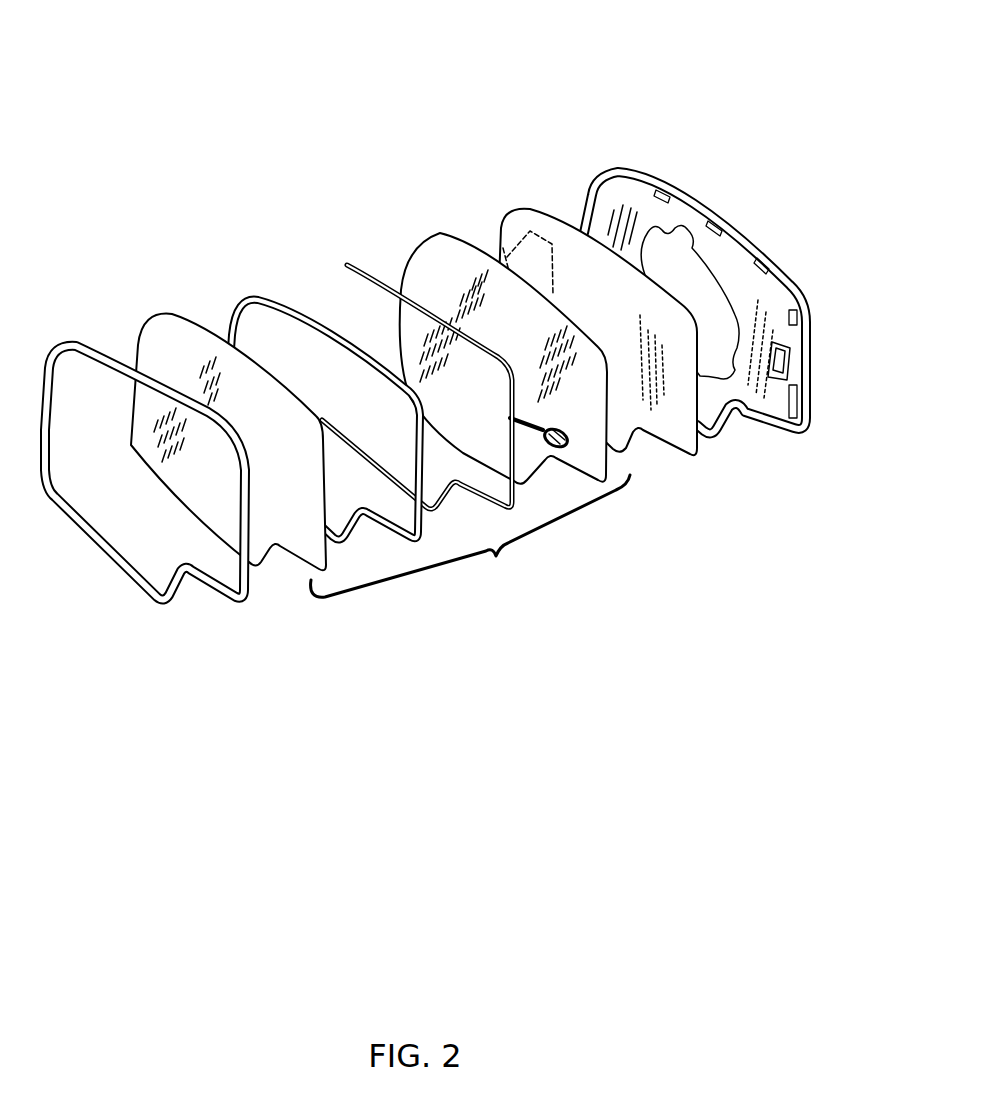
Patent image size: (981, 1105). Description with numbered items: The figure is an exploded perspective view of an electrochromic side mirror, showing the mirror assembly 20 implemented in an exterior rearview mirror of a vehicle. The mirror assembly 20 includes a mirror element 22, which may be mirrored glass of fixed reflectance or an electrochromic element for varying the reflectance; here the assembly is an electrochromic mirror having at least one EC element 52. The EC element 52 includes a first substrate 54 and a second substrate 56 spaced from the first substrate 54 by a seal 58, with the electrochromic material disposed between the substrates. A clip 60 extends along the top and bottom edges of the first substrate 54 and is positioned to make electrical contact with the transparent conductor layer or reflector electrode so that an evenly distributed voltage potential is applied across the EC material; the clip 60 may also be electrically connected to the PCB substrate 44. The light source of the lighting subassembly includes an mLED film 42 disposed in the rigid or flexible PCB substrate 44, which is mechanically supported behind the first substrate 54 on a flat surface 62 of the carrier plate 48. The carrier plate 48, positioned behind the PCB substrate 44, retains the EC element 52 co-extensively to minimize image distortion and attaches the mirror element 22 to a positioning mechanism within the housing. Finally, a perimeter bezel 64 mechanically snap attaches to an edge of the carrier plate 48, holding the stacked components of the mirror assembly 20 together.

The mirror assembly 20 is at (260, 31).
The mirror element 22 is at (661, 530).
The mLED film 42 is at (541, 179).
The PCB substrate 44 is at (598, 279).
The carrier plate 48 is at (695, 257).
The EC element 52 is at (470, 536).
The first substrate 54 is at (503, 289).
The second substrate 56 is at (228, 374).
The seal 58 is at (322, 338).
The clip 60 is at (416, 321).
The flat surface 62 is at (619, 167).
The perimeter bezel 64 is at (145, 391).